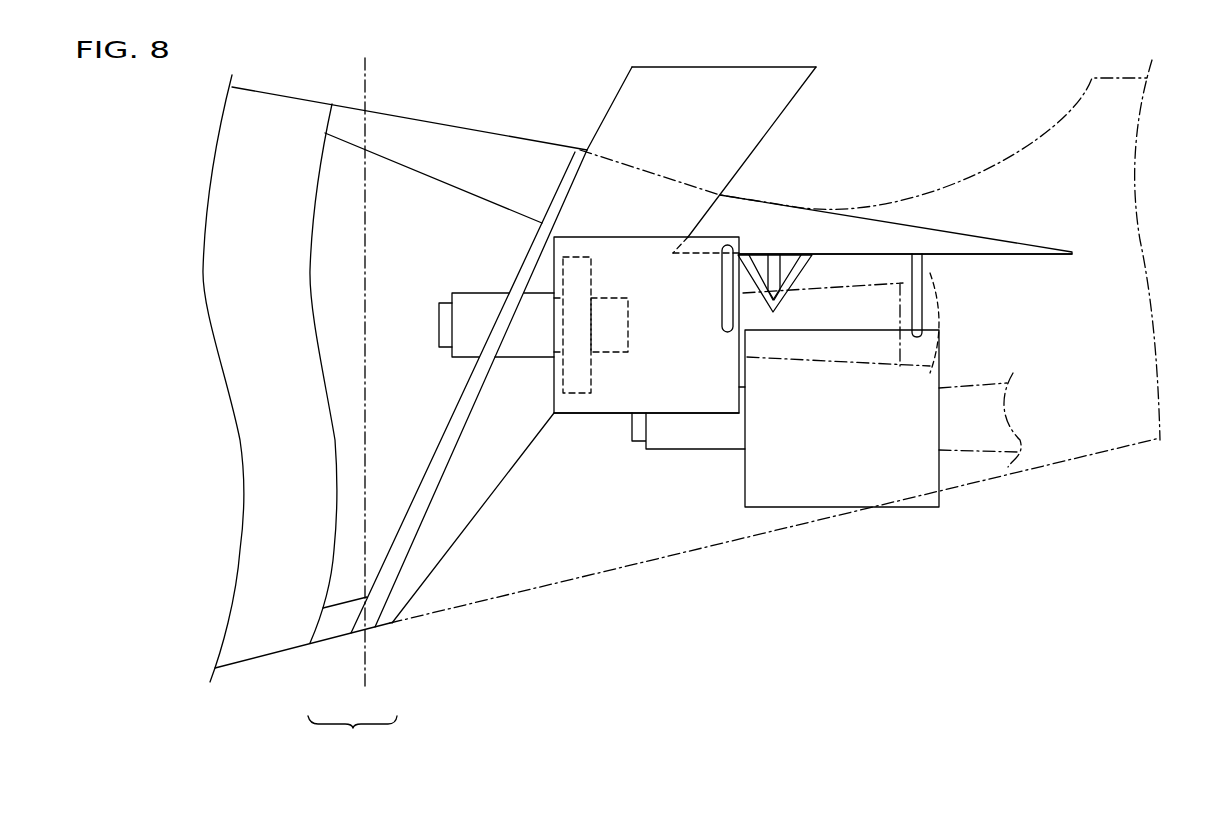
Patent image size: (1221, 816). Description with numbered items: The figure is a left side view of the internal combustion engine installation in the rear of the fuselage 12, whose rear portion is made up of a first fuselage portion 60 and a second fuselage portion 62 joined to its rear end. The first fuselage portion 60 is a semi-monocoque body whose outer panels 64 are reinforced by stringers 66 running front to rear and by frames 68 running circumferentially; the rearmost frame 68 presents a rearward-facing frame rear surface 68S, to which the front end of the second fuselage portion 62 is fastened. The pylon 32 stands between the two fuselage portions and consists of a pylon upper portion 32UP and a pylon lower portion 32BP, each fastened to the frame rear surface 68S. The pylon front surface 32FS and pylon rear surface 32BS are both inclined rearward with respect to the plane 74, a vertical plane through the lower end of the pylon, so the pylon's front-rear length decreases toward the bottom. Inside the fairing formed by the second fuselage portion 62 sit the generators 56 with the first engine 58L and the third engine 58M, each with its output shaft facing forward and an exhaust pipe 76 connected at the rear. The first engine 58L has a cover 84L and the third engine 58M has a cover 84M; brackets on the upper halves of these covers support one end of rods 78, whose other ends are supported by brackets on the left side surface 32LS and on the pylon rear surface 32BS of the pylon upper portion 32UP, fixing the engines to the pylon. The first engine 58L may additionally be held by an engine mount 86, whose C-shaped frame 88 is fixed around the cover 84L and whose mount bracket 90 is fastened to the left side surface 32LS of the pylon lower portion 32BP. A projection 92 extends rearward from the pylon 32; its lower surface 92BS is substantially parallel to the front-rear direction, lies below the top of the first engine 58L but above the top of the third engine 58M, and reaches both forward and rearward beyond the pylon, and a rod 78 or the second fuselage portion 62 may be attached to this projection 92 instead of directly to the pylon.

The fuselage 12 is at (363, 737).
The pylon 32 is at (769, 317).
The pylon front surface 32FS is at (618, 93).
The pylon rear surface 32BS is at (807, 82).
The pylon upper portion 32UP is at (790, 123).
The left side surface 32LS is at (710, 155).
The pylon lower portion 32BP is at (485, 513).
The generator 56 is at (462, 292).
The first engine 58L is at (646, 373).
The third engine 58M is at (839, 471).
The first fuselage portion 60 is at (275, 655).
The second fuselage portion 62 is at (432, 625).
The outer panel 64 is at (250, 162).
The stringer 66 is at (393, 122).
The frame 68 is at (469, 391).
The frame rear surface 68S is at (407, 547).
The plane 74 is at (363, 359).
The exhaust pipe 76 is at (975, 383).
The rod 78 is at (718, 291).
The cover 84L is at (625, 397).
The cover 84M is at (872, 482).
The engine mount 86 is at (638, 325).
The C-shaped frame 88 is at (577, 365).
The mount bracket 90 is at (608, 330).
The projection 92 is at (874, 234).
The lower surface 92BS is at (995, 257).